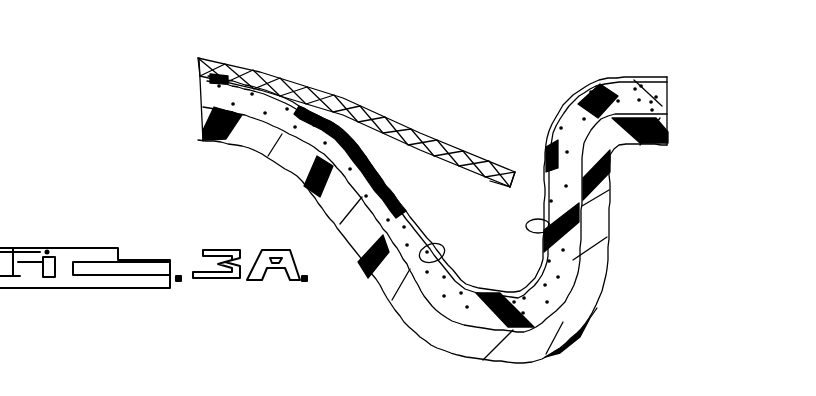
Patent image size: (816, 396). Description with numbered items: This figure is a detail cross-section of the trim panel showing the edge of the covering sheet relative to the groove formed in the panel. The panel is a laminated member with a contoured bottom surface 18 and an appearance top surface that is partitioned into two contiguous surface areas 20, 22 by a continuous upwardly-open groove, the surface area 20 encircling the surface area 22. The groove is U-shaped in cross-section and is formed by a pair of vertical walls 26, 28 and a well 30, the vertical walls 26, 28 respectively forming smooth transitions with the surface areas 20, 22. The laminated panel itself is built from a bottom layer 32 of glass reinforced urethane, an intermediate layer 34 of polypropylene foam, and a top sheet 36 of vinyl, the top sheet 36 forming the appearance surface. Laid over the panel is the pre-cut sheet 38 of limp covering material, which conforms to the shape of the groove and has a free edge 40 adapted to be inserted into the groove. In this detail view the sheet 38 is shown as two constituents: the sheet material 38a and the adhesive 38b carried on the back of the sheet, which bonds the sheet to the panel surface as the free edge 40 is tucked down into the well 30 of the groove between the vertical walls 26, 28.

The bottom surface 18 is at (268, 162).
The surface area 20 is at (384, 189).
The surface area 22 is at (243, 78).
The vertical wall 26 is at (583, 233).
The vertical wall 28 is at (440, 255).
The well 30 is at (483, 278).
The bottom layer 32 is at (238, 140).
The intermediate layer 34 is at (207, 99).
The top sheet 36 is at (200, 77).
The sheet 38 is at (356, 107).
The sheet material 38a is at (377, 118).
The adhesive 38b is at (413, 134).
The free edge 40 is at (477, 164).